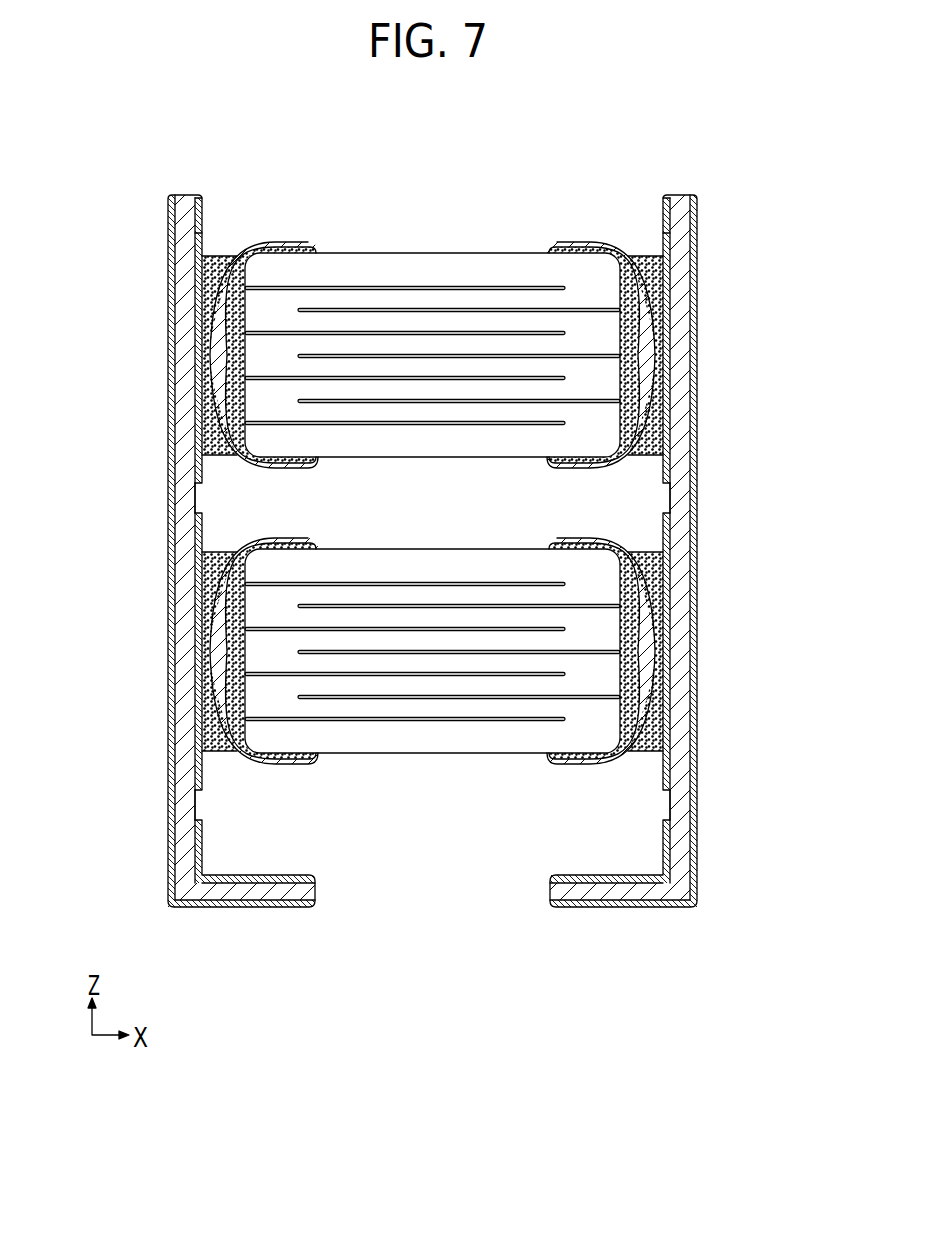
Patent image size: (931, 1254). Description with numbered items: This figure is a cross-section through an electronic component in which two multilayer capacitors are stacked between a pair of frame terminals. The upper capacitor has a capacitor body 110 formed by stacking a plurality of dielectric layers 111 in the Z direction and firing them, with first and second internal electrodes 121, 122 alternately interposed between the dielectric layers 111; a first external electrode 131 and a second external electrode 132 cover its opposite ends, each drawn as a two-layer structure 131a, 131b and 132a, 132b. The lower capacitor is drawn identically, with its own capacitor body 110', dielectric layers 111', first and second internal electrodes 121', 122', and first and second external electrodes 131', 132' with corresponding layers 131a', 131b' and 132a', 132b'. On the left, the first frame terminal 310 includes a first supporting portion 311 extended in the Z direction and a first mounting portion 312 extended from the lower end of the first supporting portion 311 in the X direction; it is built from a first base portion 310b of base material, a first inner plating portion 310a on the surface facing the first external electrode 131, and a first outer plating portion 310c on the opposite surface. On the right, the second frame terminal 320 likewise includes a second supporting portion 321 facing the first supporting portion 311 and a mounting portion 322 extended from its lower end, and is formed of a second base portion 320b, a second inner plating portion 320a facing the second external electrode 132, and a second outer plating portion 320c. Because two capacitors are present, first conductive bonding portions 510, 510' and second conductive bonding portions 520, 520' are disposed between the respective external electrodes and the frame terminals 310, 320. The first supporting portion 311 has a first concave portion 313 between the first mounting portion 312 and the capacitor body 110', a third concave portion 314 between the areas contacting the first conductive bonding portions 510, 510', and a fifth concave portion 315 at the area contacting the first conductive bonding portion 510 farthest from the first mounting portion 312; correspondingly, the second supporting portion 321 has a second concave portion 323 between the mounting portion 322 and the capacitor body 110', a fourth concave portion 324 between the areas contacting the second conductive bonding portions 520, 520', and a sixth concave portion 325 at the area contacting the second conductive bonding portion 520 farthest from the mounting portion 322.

The capacitor body 110 is at (495, 332).
The dielectric layer 111 is at (495, 355).
The first internal electrode 121 is at (521, 338).
The second internal electrode 122 is at (495, 356).
The first external electrode 131 is at (281, 306).
The first electrode layer of first external electrode 131a is at (288, 321).
The second electrode layer (plating) of first external electrode 131b is at (264, 324).
The second external electrode 132 is at (583, 306).
The first electrode layer of second external electrode 132a is at (578, 321).
The second electrode layer (plating) of second external electrode 132b is at (601, 324).
The capacitor body 110' is at (497, 745).
The dielectric layer of second capacitor 111' is at (497, 651).
The first internal electrode of second capacitor 121' is at (523, 637).
The second internal electrode of second capacitor 122' is at (497, 652).
The first external electrode of second capacitor 131' is at (315, 784).
The first electrode layer of first external electrode of second capacitor 131a' is at (323, 767).
The second electrode layer of first external electrode of second capacitor 131b' is at (289, 765).
The second external electrode of second capacitor 132' is at (561, 786).
The first electrode layer of second external electrode of second capacitor 132a' is at (553, 772).
The second electrode layer of second external electrode of second capacitor 132b' is at (588, 770).
The first frame terminal 310 is at (187, 542).
The first inner plating portion 310a is at (203, 729).
The first base portion 310b is at (187, 755).
The first outer plating portion 310c is at (172, 782).
The first supporting portion 311 is at (185, 862).
The first mounting portion 312 is at (235, 907).
The first concave portion 313 is at (198, 811).
The third concave portion 314 is at (198, 499).
The fifth concave portion 315 is at (198, 224).
The second frame terminal 320 is at (681, 542).
The second inner plating portion 320a is at (662, 729).
The second base portion 320b is at (678, 755).
The second outer plating portion 320c is at (693, 782).
The second supporting portion 321 is at (680, 862).
The mounting portion 322 is at (630, 907).
The second concave portion 323 is at (667, 811).
The fourth concave portion 324 is at (667, 499).
The sixth concave portion 325 is at (667, 224).
The first conductive bonding portion 510 is at (175, 355).
The second conductive bonding portion 520 is at (686, 352).
The first conductive bonding portion 510' is at (249, 755).
The second conductive bonding portion 520' is at (619, 755).